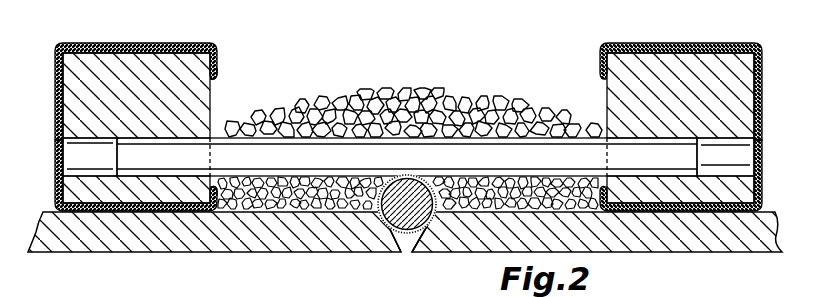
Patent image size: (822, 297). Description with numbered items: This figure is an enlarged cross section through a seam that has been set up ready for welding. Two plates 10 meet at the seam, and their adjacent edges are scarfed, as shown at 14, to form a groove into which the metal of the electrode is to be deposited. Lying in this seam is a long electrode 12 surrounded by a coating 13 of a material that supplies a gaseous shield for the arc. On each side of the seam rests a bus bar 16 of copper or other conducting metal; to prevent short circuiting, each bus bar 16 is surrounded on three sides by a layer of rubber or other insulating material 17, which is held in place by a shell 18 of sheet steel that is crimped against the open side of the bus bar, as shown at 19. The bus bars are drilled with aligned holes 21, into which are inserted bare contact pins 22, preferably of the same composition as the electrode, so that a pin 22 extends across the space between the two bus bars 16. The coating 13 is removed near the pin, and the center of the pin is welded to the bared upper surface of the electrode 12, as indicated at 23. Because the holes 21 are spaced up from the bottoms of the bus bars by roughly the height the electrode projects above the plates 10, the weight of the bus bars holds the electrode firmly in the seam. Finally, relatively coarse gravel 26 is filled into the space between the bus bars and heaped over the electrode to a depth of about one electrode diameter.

The plates 10 is at (245, 235).
The electrode 12 is at (380, 232).
The coating 13 is at (340, 220).
The scarfed edges 14 is at (430, 240).
The bus bar 16 is at (108, 83).
The insulating material 17 is at (55, 96).
The shell 18 is at (56, 193).
The crimped edge 19 is at (220, 56).
The holes 21 is at (62, 150).
The contact pins 22 is at (663, 160).
The weld 23 is at (427, 180).
The gravel 26 is at (450, 105).